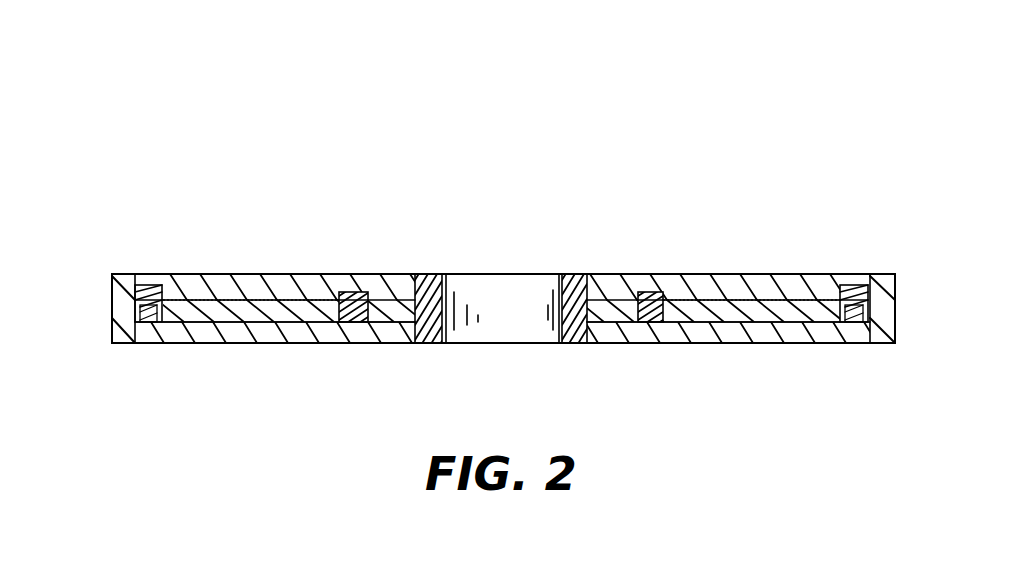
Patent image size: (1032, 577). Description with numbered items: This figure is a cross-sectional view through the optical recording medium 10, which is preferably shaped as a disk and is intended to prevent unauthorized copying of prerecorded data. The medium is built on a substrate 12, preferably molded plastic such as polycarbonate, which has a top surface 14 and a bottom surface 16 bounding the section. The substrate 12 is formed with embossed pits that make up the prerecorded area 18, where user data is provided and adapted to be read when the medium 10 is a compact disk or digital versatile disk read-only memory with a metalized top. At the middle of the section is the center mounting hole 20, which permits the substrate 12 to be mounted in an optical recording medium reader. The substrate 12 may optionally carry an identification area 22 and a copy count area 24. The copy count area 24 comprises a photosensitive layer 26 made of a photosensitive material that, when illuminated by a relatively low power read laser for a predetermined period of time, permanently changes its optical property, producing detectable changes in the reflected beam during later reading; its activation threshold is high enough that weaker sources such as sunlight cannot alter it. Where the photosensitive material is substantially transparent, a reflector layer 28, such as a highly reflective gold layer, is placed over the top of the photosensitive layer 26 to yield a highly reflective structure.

The optical recording medium 10 is at (554, 188).
The substrate 12 is at (897, 292).
The top surface 14 is at (262, 277).
The bottom surface 16 is at (265, 343).
The prerecorded area 18 is at (765, 277).
The center mounting hole 20 is at (476, 290).
The identification area 22 is at (355, 292).
The copy count area 24 is at (145, 290).
The photosensitive layer 26 is at (142, 322).
The reflector layer 28 is at (150, 286).